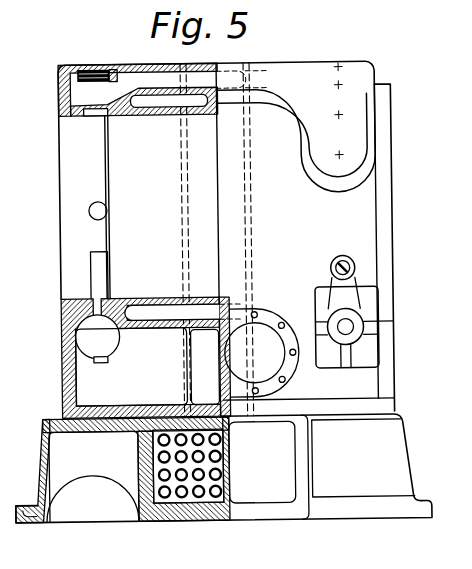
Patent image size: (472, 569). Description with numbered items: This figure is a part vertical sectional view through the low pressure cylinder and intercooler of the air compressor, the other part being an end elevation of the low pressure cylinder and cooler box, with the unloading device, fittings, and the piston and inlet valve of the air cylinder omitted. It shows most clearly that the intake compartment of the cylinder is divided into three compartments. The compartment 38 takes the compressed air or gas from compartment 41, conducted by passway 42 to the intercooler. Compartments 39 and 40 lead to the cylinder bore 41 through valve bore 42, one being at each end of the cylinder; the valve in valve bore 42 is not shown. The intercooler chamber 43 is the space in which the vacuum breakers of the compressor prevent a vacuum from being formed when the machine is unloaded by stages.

The compartment 38 is at (205, 366).
The compartment 39 is at (131, 367).
The compartment 40 is at (244, 360).
The compartment 41 is at (168, 264).
The passway 42 is at (171, 217).
The intercooler chamber 43 is at (155, 494).